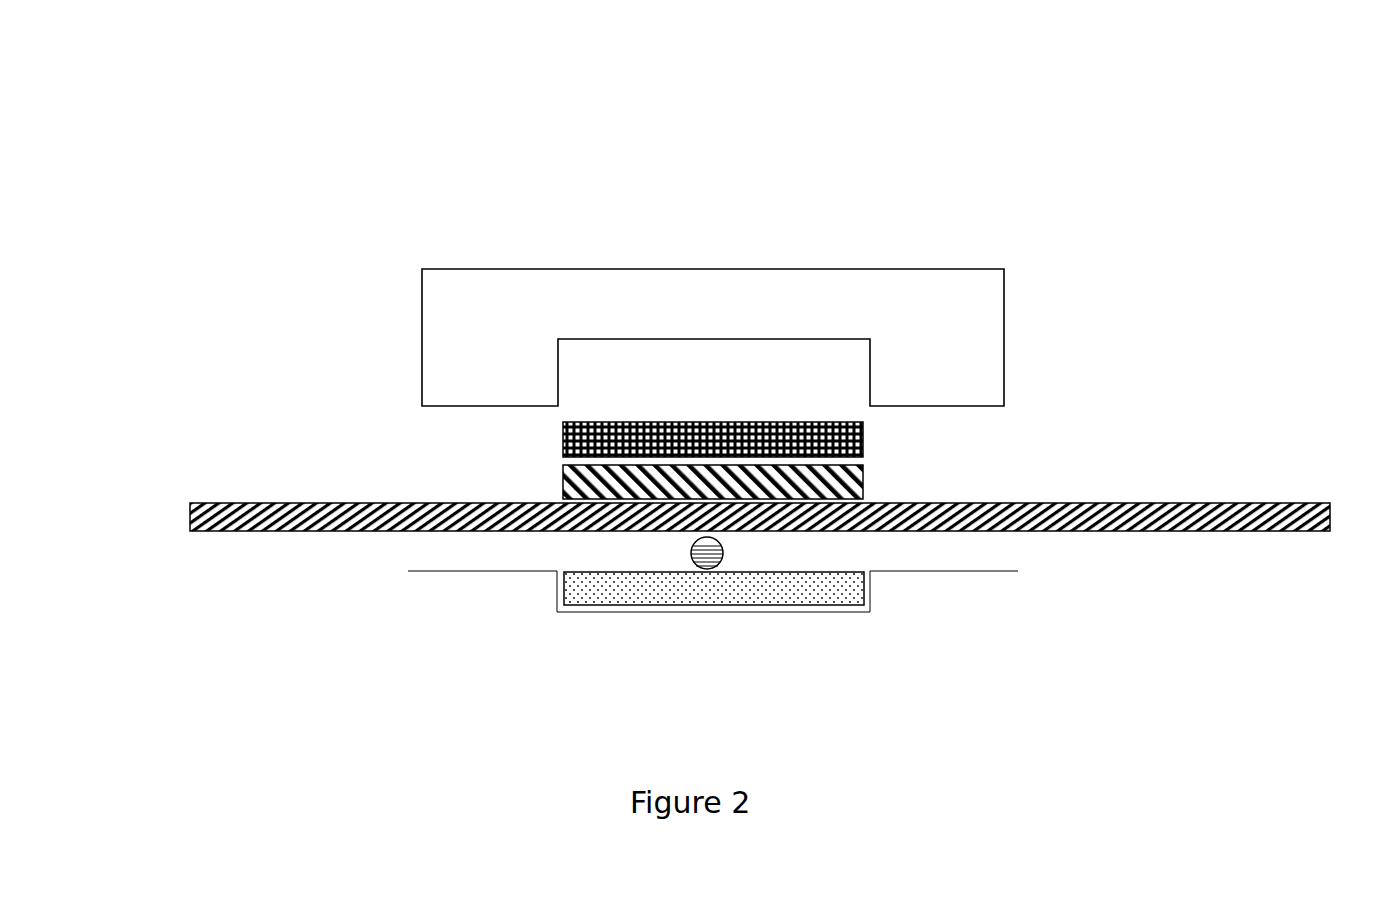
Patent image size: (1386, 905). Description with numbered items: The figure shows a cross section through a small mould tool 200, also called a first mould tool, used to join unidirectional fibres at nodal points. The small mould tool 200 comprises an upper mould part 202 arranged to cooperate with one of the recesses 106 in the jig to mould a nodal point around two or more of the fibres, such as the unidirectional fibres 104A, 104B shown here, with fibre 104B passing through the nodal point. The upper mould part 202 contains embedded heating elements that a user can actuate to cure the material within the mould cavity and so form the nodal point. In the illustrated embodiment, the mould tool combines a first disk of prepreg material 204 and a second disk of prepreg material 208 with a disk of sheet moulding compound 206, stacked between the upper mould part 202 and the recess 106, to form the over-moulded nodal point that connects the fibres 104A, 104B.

The small mould tool 200 is at (306, 118).
The upper mould part 202 is at (830, 269).
The first disk of prepreg material 204 is at (863, 440).
The disk of sheet moulding compound 206 is at (565, 482).
The unidirectional fibre 104A is at (1228, 503).
The unidirectional fibre 104B is at (728, 553).
The recess 106 is at (812, 612).
The second disk of prepreg material 208 is at (637, 605).